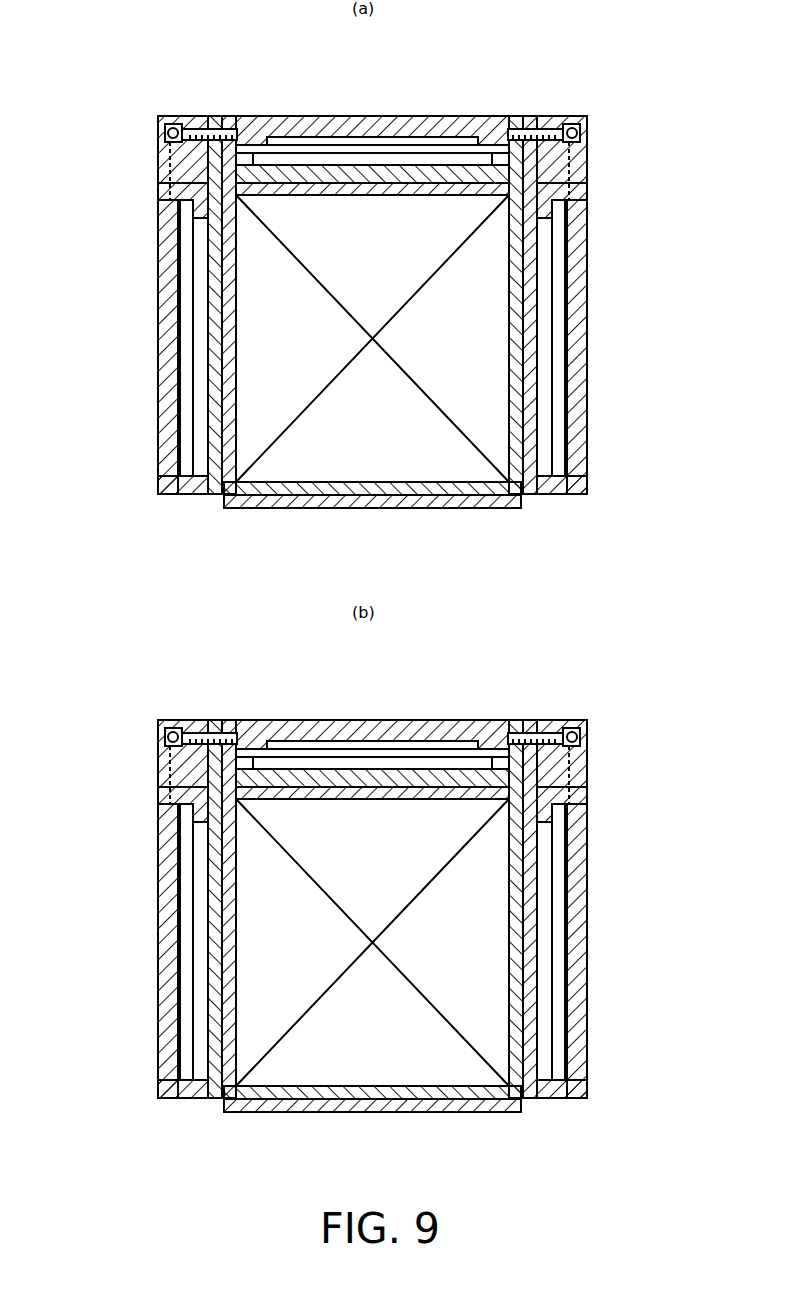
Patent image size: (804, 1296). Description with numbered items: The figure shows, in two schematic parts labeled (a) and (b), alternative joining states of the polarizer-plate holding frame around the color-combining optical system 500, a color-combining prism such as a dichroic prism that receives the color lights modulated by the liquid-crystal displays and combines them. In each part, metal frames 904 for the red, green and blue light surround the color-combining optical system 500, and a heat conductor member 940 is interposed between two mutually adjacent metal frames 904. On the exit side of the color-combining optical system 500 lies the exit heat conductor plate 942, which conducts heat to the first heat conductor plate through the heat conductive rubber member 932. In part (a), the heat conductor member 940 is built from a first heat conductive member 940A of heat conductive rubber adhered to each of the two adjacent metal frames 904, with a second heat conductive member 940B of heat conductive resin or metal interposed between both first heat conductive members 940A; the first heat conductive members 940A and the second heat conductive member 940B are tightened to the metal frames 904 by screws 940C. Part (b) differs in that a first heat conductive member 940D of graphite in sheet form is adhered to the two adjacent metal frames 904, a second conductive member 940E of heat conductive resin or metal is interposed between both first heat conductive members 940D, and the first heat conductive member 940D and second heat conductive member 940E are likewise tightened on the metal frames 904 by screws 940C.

The color-combining optical system 500 is at (412, 470).
The metal frame 904 is at (345, 116).
The heat conductive rubber member 932 is at (340, 508).
The heat conductor member 940 is at (378, 408).
The first heat conductive member 940A is at (212, 116).
The second heat conductive member 940B is at (196, 116).
The screw 940C is at (232, 116).
The first heat conductive member 940D is at (212, 720).
The second conductive member 940E is at (380, 700).
The exit heat conductor plate 942 is at (272, 508).